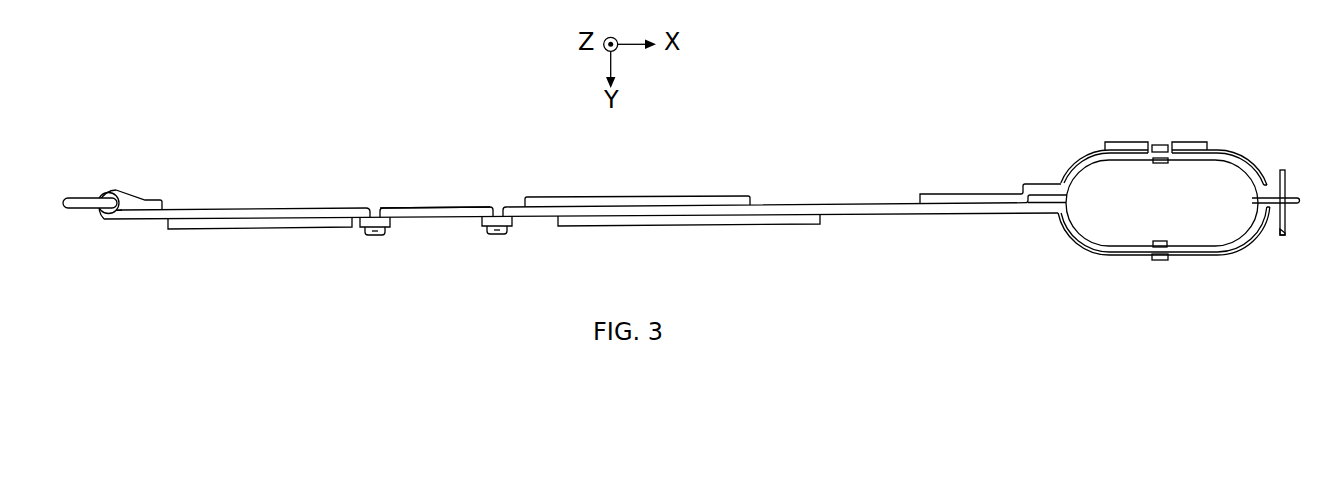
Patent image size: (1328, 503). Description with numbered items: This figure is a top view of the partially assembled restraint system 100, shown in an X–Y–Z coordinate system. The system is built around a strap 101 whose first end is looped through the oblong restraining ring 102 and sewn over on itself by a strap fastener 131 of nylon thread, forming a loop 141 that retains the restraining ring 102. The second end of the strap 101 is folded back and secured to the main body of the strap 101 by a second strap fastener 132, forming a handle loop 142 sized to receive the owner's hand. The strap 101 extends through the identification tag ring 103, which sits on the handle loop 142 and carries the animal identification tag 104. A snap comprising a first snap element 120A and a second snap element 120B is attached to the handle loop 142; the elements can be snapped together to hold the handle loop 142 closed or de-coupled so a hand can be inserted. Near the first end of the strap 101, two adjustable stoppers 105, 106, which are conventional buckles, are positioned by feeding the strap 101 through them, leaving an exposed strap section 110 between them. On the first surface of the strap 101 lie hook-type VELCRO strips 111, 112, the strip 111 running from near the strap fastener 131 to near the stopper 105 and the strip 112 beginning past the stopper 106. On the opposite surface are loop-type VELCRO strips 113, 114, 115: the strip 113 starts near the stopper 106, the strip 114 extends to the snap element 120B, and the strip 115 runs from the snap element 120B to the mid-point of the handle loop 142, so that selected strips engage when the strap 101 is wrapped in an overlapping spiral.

The restraint system 100 is at (351, 152).
The strap 101 is at (812, 204).
The restraining ring 102 is at (80, 196).
The identification tag ring 103 is at (1286, 196).
The identification tag 104 is at (1283, 236).
The adjustable stopper 105 is at (390, 224).
The adjustable stopper 106 is at (512, 224).
The strap section 110 is at (437, 207).
The VELCRO strip 111 is at (263, 226).
The VELCRO strip 112 is at (647, 218).
The VELCRO strip 113 is at (703, 200).
The VELCRO strip 114 is at (967, 198).
The VELCRO strip 115 is at (1187, 143).
The first snap element 120A is at (1157, 243).
The second snap element 120B is at (1163, 162).
The strap fastener 131 is at (150, 199).
The strap fastener 132 is at (1043, 199).
The loop 141 is at (117, 211).
The handle loop 142 is at (1112, 172).